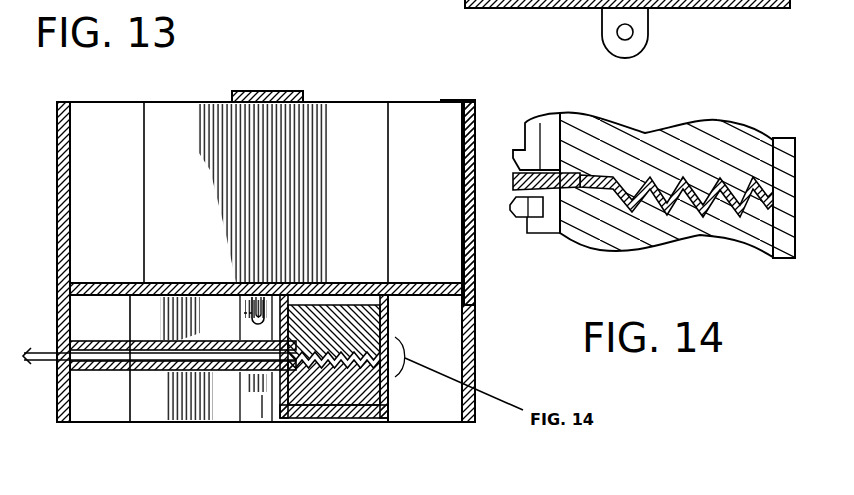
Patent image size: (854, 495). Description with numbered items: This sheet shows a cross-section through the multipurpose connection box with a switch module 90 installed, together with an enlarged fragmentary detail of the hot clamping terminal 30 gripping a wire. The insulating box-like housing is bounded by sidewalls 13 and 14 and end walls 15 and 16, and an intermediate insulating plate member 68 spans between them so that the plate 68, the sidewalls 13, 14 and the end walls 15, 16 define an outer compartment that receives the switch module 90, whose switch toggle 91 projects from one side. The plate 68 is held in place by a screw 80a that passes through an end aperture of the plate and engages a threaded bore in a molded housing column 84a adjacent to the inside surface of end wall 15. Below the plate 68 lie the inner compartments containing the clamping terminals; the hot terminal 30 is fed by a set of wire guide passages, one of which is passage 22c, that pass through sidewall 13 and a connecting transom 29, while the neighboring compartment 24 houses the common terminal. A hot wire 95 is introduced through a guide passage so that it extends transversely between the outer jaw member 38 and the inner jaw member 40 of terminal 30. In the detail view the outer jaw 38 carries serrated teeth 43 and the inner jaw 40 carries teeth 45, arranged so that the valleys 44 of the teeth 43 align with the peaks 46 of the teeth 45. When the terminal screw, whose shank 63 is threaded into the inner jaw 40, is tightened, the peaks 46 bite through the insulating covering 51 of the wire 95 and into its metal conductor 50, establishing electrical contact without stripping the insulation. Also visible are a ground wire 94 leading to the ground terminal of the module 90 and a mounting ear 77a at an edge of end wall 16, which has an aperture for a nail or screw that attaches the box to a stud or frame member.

In FIG. 13, the sidewall 13 is at (56, 218).
In FIG. 13, the sidewall 14 is at (477, 341).
In FIG. 13, the end wall 15 is at (106, 102).
In FIG. 14, the end wall 16 is at (690, 8).
In FIG. 13, the wire guide passage 22c is at (148, 372).
In FIG. 13, the inner compartment 24 is at (220, 393).
In FIG. 13, the connecting transom 29 is at (100, 372).
In FIG. 13, the wire clamping terminal 30 is at (355, 300).
In FIG. 14, the wire clamping terminal 30 is at (562, 236).
In FIG. 14, the outer jaw member 38 is at (713, 120).
In FIG. 14, the inner jaw member 40 is at (748, 254).
In FIG. 14, the teeth 43 is at (643, 160).
In FIG. 14, the valleys 44 is at (760, 140).
In FIG. 14, the teeth 45 is at (685, 215).
In FIG. 14, the peaks 46 is at (720, 210).
In FIG. 14, the metal conductor 50 is at (513, 178).
In FIG. 14, the insulating covering 51 is at (517, 168).
In FIG. 14, the screw shank 63 is at (755, 8).
In FIG. 13, the plate member 68 is at (97, 284).
In FIG. 14, the mounting ear 77a is at (600, 22).
In FIG. 13, the screw 80a is at (243, 312).
In FIG. 13, the molded housing column 84a is at (253, 407).
In FIG. 13, the switch module 90 is at (331, 102).
In FIG. 13, the switch toggle 91 is at (263, 92).
In FIG. 14, the ground wire 94 is at (729, 8).
In FIG. 13, the hot wire 95 is at (36, 362).
In FIG. 14, the hot wire 95 is at (503, 193).